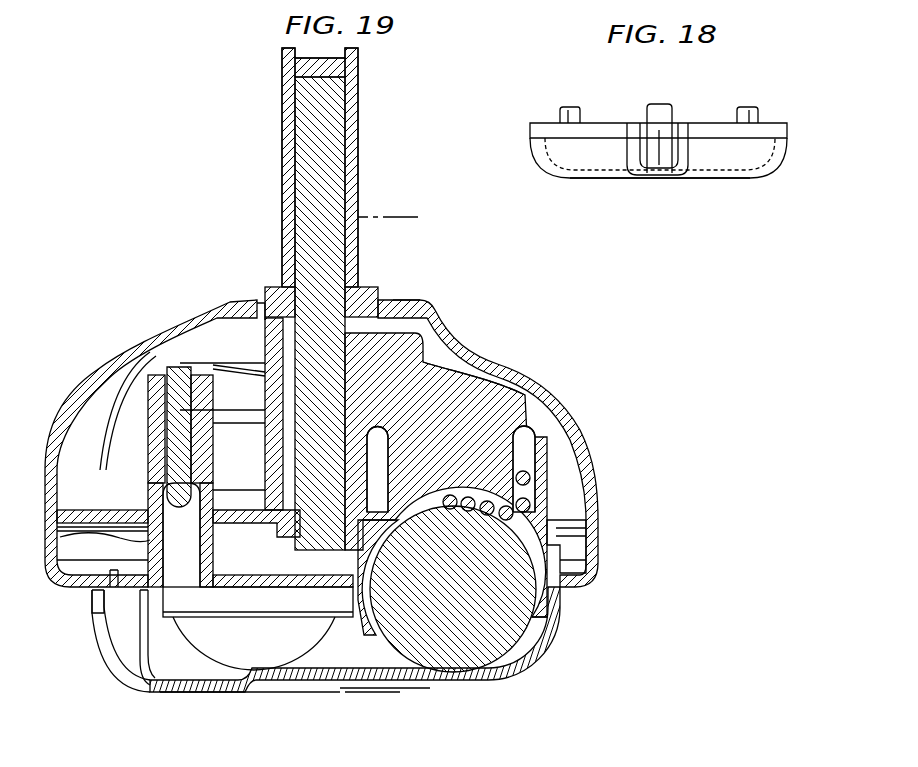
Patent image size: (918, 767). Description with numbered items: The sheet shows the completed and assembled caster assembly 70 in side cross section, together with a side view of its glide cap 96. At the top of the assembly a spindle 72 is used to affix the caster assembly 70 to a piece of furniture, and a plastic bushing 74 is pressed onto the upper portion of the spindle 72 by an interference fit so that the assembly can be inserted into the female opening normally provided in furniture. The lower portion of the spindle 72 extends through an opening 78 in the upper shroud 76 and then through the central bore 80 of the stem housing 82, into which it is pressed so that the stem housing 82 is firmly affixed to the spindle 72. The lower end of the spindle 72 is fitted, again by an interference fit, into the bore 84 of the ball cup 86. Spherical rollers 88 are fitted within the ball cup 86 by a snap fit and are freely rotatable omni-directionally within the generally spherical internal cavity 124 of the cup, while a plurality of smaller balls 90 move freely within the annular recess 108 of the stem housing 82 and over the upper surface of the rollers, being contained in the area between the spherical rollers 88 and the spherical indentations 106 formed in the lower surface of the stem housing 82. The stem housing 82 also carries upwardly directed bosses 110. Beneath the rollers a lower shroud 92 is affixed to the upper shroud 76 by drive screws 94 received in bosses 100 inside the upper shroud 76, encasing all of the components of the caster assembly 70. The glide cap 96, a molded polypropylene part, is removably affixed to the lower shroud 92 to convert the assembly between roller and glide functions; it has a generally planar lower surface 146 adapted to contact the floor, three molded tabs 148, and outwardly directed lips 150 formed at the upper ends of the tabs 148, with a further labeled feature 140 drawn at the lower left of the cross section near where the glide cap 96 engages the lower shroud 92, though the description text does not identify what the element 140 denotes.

In FIG. 19, the caster assembly 70 is at (118, 303).
In FIG. 19, the spindle 72 is at (320, 200).
In FIG. 19, the bushing 74 is at (358, 100).
In FIG. 19, the upper shroud 76 is at (80, 387).
In FIG. 19, the opening 78 is at (393, 303).
In FIG. 19, the central bore 80 is at (423, 317).
In FIG. 19, the stem housing 82 is at (540, 387).
In FIG. 19, the bore 84 is at (437, 493).
In FIG. 19, the ball cup 86 is at (540, 538).
In FIG. 19, the spherical rollers 88 is at (510, 640).
In FIG. 19, the smaller balls 90 is at (532, 506).
In FIG. 19, the lower shroud 92 is at (58, 578).
In FIG. 19, the drive screws 94 is at (130, 468).
In FIG. 19, the glide cap 96 is at (520, 672).
In FIG. 18, the glide cap 96 is at (565, 175).
In FIG. 19, the bosses 100 is at (203, 333).
In FIG. 19, the spherical indentation 106 is at (537, 477).
In FIG. 19, the annular recess 108 is at (527, 447).
In FIG. 19, the upwardly directed bosses 110 is at (60, 536).
In FIG. 19, the internal cavity 124 is at (540, 630).
In FIG. 19, the tab 140 is at (130, 595).
In FIG. 19, the lower surface 146 is at (185, 692).
In FIG. 18, the lower surface 146 is at (604, 190).
In FIG. 19, the tabs 148 is at (140, 640).
In FIG. 18, the tabs 148 is at (665, 118).
In FIG. 19, the lips 150 is at (110, 570).
In FIG. 18, the lips 150 is at (562, 108).